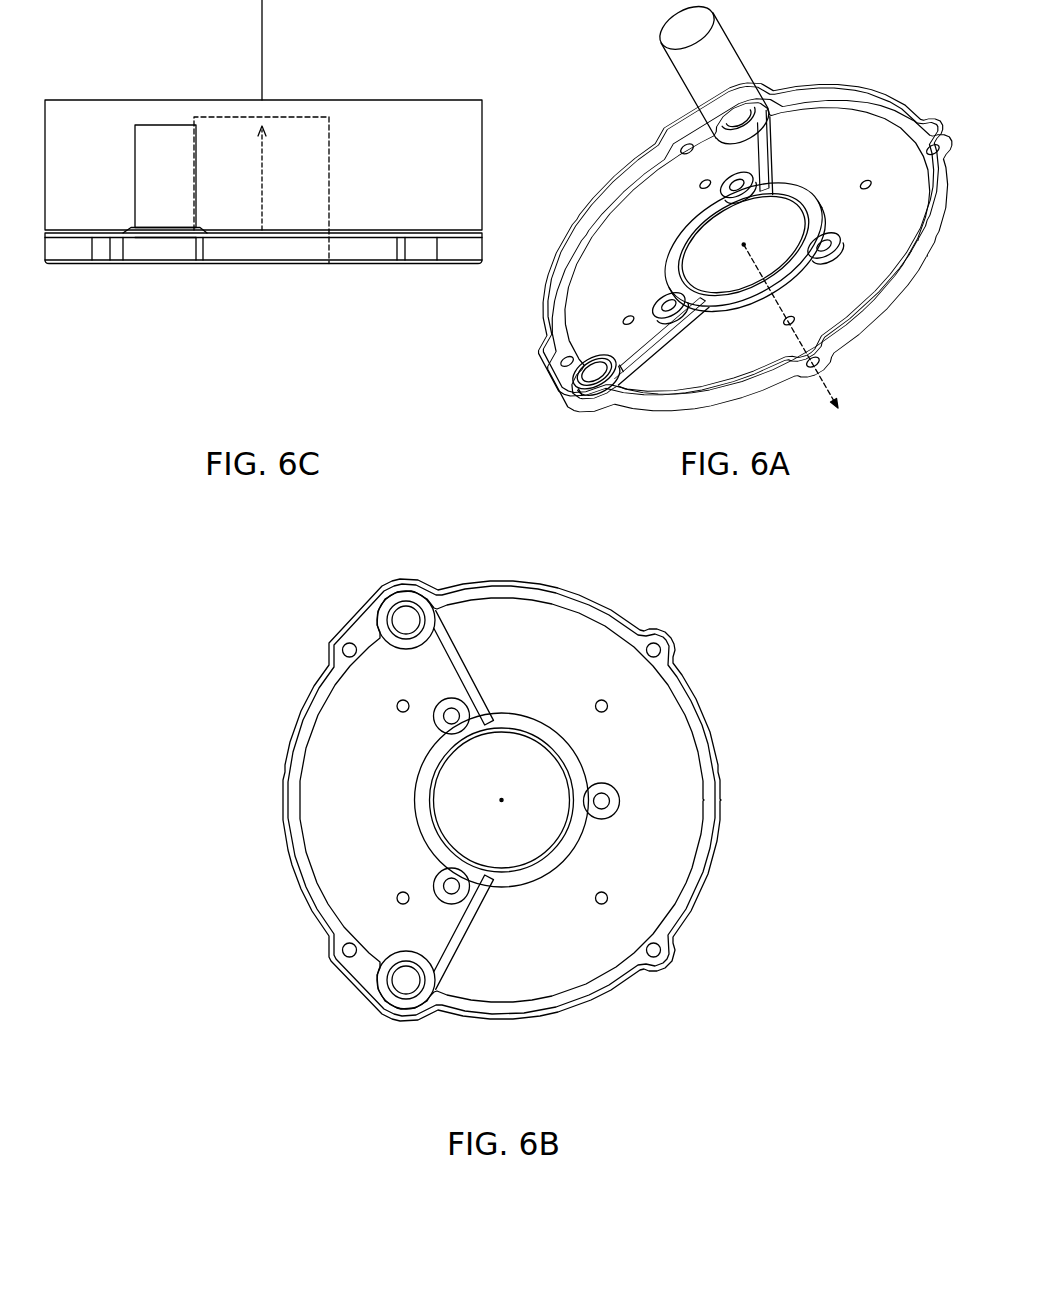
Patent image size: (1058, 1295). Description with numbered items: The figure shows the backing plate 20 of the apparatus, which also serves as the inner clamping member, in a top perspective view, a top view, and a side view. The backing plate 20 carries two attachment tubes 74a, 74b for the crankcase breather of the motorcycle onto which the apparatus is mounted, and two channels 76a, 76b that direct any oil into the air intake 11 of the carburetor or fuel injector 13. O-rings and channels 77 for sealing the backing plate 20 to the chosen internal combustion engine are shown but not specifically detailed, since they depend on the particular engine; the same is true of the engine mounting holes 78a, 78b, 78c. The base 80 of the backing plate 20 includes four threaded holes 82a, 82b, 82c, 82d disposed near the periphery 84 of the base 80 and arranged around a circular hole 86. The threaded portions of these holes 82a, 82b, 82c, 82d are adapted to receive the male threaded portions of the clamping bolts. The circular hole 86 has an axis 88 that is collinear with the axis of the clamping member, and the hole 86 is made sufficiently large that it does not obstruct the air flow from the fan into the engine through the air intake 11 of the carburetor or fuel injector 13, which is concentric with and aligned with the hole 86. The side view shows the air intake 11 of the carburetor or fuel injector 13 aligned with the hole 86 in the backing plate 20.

In FIG. 6C, the air intake 11 is at (303, 230).
In FIG. 6C, the carburetor or fuel injector 13 is at (389, 95).
In FIG. 6C, the backing plate 20 is at (383, 232).
In FIG. 6B, the backing plate 20 is at (687, 673).
In FIG. 6A, the backing plate 20 is at (880, 318).
In FIG. 6B, the attachment tube 74a is at (383, 578).
In FIG. 6A, the attachment tube 74a is at (738, 45).
In FIG. 6B, the attachment tube 74b is at (383, 1022).
In FIG. 6A, the attachment tube 74b is at (520, 325).
In FIG. 6B, the channel 76a is at (462, 653).
In FIG. 6A, the channel 76a is at (768, 152).
In FIG. 6B, the channel 76b is at (471, 946).
In FIG. 6A, the channel 76b is at (661, 342).
In FIG. 6C, the O-rings and channels 77 is at (486, 231).
In FIG. 6B, the engine mounting hole 78a is at (437, 726).
In FIG. 6A, the engine mounting hole 78a is at (737, 187).
In FIG. 6B, the engine mounting hole 78b is at (616, 793).
In FIG. 6A, the engine mounting hole 78b is at (824, 248).
In FIG. 6B, the engine mounting hole 78c is at (433, 884).
In FIG. 6A, the engine mounting hole 78c is at (669, 308).
In FIG. 6C, the base 80 is at (395, 268).
In FIG. 6B, the base 80 is at (604, 600).
In FIG. 6A, the base 80 is at (852, 90).
In FIG. 6B, the threaded hole 82a is at (345, 628).
In FIG. 6A, the threaded hole 82a is at (687, 149).
In FIG. 6B, the threaded hole 82b is at (658, 630).
In FIG. 6A, the threaded hole 82b is at (932, 150).
In FIG. 6B, the threaded hole 82c is at (679, 955).
In FIG. 6A, the threaded hole 82c is at (812, 362).
In FIG. 6B, the threaded hole 82d is at (332, 971).
In FIG. 6A, the threaded hole 82d is at (567, 362).
In FIG. 6B, the periphery 84 is at (722, 775).
In FIG. 6A, the periphery 84 is at (610, 177).
In FIG. 6C, the circular hole 86 is at (227, 250).
In FIG. 6B, the circular hole 86 is at (537, 772).
In FIG. 6A, the circular hole 86 is at (792, 262).
In FIG. 6C, the axis 88 is at (266, 188).
In FIG. 6B, the axis 88 is at (499, 803).
In FIG. 6A, the axis 88 is at (831, 393).